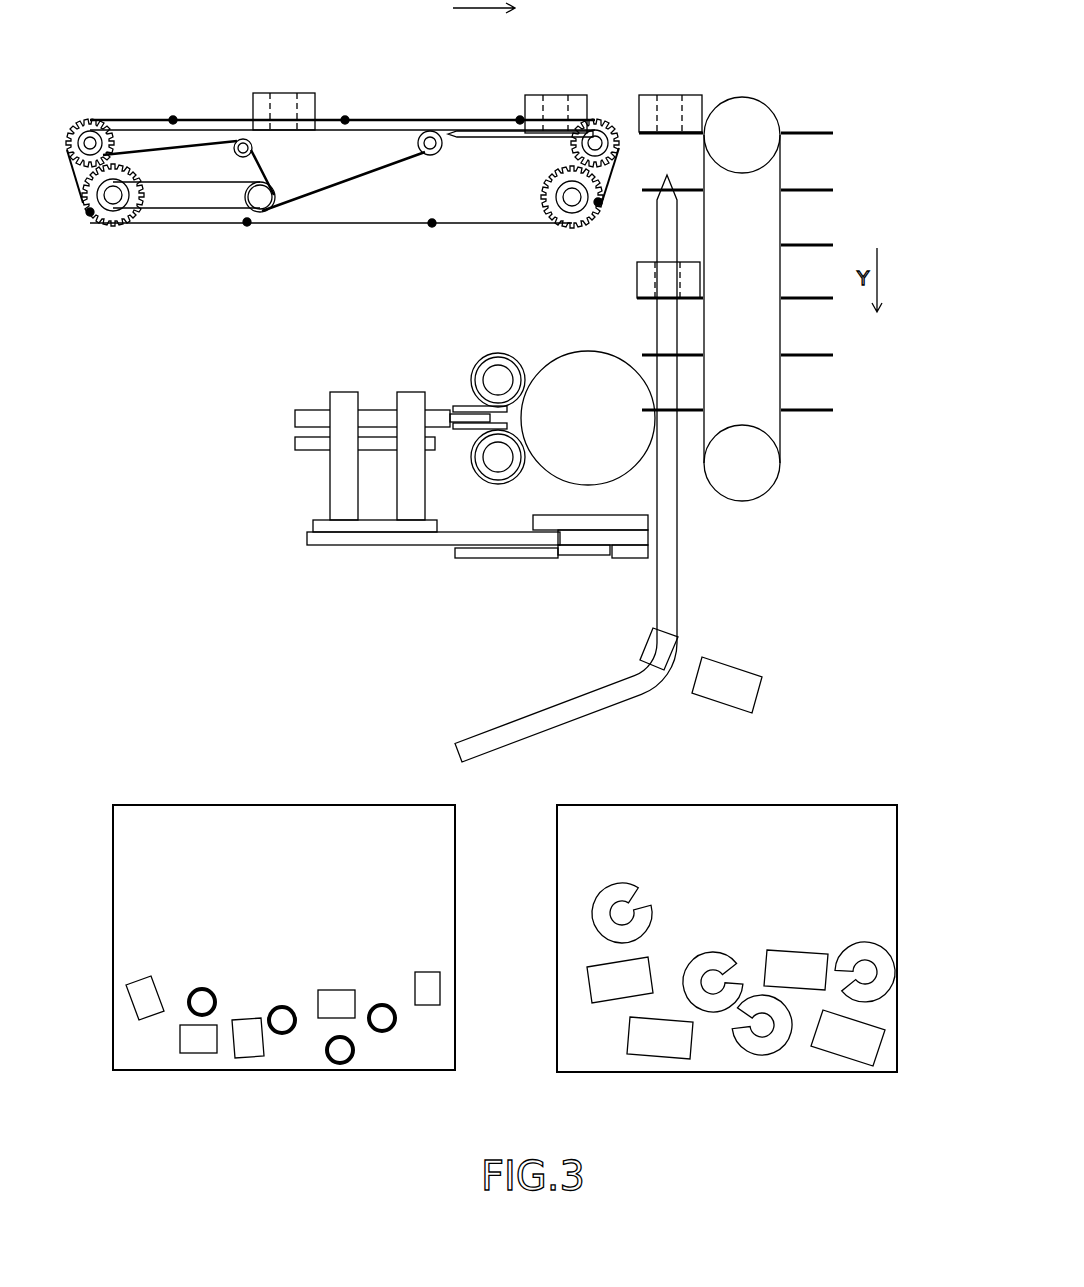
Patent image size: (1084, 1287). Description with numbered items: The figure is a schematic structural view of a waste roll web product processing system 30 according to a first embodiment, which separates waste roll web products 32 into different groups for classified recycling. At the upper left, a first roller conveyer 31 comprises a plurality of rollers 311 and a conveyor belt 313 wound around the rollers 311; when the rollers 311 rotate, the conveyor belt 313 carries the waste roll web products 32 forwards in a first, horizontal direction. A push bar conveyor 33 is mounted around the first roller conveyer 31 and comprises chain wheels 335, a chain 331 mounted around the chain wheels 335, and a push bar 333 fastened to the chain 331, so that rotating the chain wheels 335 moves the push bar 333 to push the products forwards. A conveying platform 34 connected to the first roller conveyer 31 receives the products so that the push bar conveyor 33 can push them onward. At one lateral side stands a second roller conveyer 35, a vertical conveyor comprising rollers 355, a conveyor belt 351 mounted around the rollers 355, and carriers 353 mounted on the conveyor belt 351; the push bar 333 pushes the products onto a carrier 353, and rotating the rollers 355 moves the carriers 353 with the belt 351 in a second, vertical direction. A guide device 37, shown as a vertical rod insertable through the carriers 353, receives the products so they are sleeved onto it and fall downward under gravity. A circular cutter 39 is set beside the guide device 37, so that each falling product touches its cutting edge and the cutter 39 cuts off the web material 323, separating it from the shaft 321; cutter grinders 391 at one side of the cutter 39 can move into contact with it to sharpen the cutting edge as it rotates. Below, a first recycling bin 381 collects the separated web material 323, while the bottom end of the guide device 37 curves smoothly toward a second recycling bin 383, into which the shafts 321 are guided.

The waste roll web product processing system 30 is at (315, 28).
The first roller conveyer 31 is at (103, 84).
The rollers 311 is at (100, 128).
The conveyor belt 313 is at (143, 128).
The waste roll web products 32 is at (608, 44).
The shaft 321 is at (672, 99).
The web material 323 is at (648, 99).
The push bar conveyor 33 is at (115, 276).
The chain 331 is at (196, 226).
The push bar 333 is at (245, 224).
The chain wheels 335 is at (120, 228).
The conveying platform 34 is at (487, 131).
The second roller conveyer 35 is at (804, 85).
The conveyor belt 351 is at (782, 162).
The carrier 353 is at (815, 133).
The rollers 355 is at (740, 100).
The guide device 37 is at (658, 327).
The cutter 39 is at (562, 355).
The cutter grinders 391 is at (470, 343).
The first recycling bin 381 is at (545, 939).
The second recycling bin 383 is at (471, 865).